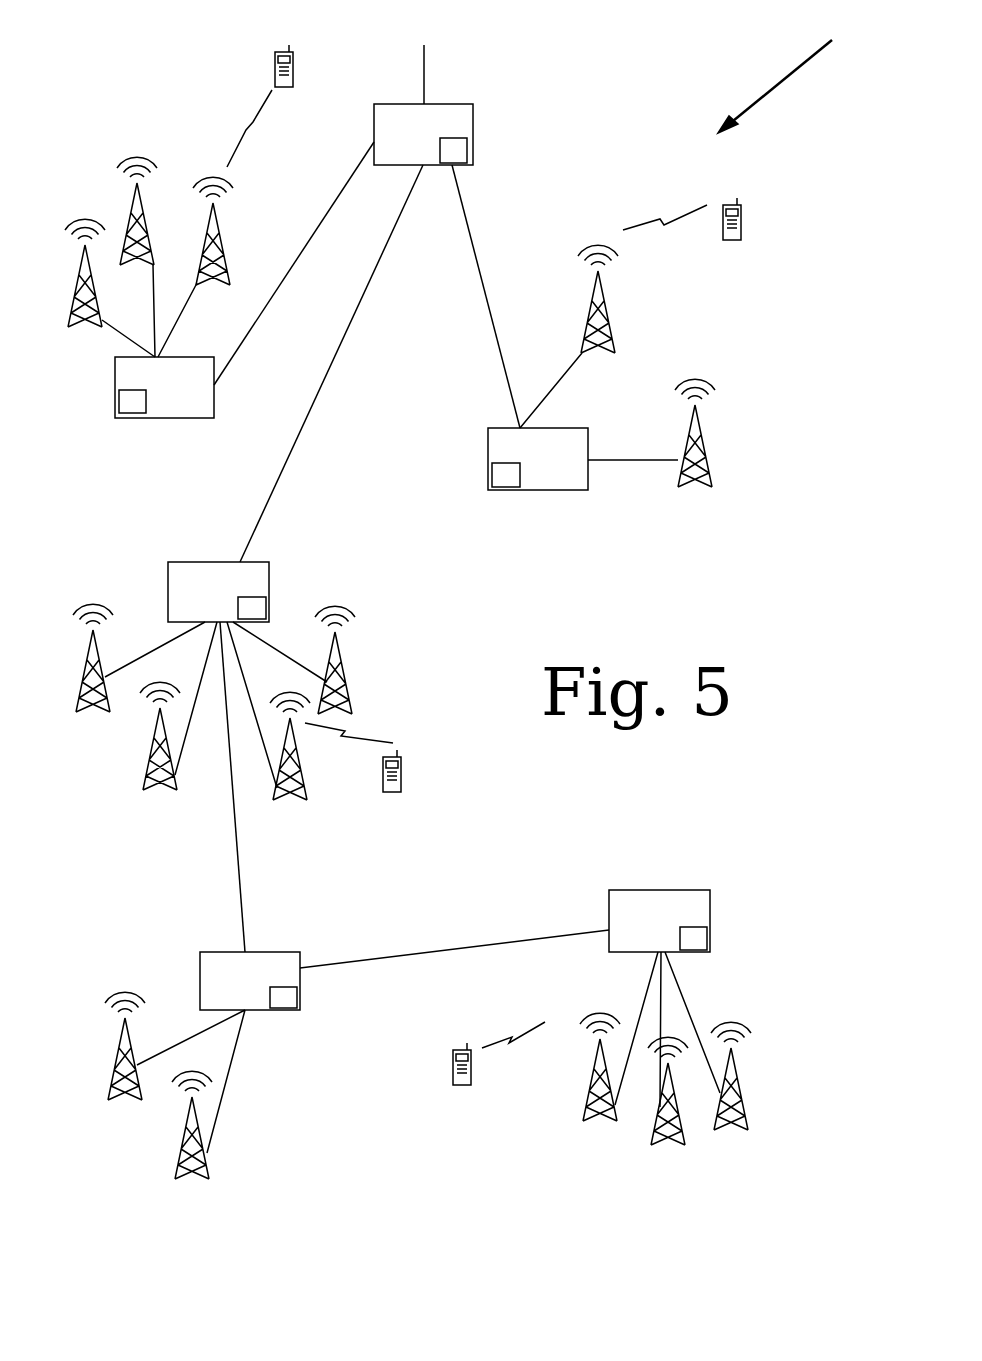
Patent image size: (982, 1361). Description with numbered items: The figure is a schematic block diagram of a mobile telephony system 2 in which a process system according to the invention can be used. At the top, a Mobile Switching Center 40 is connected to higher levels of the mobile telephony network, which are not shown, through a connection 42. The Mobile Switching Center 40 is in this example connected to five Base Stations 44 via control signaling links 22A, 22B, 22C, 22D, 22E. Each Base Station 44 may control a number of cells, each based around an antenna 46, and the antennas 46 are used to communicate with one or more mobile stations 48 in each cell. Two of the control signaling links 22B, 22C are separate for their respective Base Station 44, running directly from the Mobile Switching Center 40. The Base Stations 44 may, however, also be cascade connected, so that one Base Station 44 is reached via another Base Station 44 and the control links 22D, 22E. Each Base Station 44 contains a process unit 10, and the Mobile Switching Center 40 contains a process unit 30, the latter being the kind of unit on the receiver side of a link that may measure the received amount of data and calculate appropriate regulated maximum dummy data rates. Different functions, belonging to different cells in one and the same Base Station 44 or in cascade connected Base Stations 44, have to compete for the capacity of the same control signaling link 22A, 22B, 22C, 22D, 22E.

The mobile telephony system 2 is at (786, 70).
The process unit 10 is at (127, 418).
The control signaling link 22A is at (323, 382).
The control signaling link 22B is at (285, 277).
The control signaling link 22C is at (472, 243).
The control signaling link 22D is at (240, 845).
The control signaling link 22E is at (433, 952).
The process unit 30 is at (467, 162).
The Mobile Switching Center 40 is at (467, 118).
The connection 42 is at (424, 54).
The Base Station 44 is at (180, 410).
The antenna 46 is at (68, 330).
The mobile station 48 is at (290, 87).